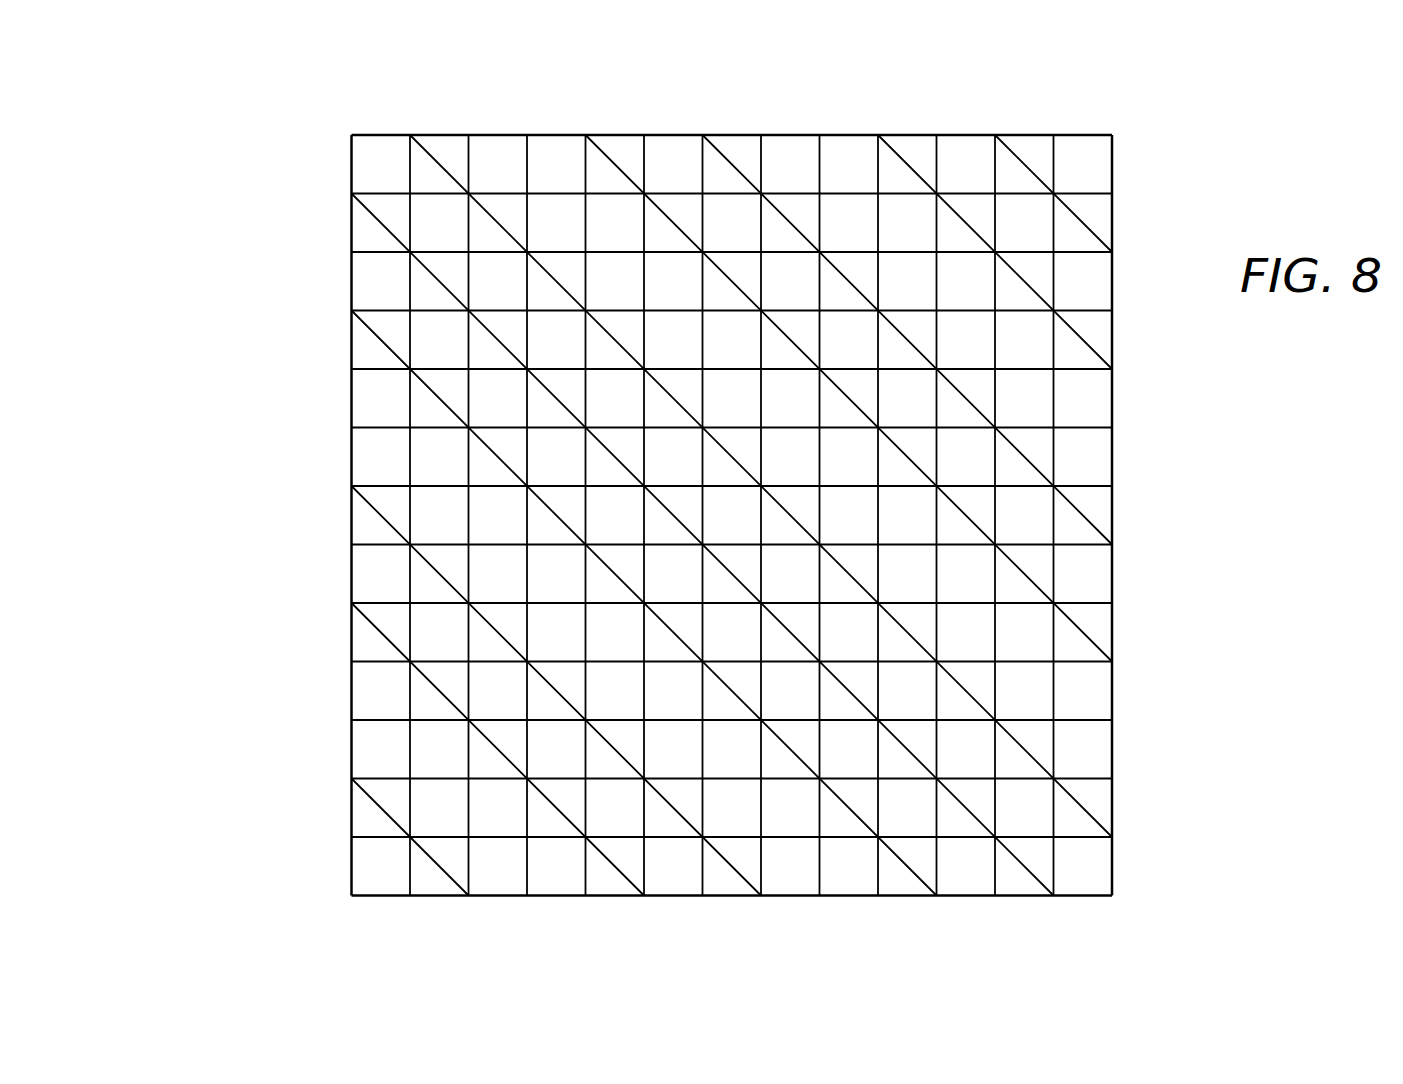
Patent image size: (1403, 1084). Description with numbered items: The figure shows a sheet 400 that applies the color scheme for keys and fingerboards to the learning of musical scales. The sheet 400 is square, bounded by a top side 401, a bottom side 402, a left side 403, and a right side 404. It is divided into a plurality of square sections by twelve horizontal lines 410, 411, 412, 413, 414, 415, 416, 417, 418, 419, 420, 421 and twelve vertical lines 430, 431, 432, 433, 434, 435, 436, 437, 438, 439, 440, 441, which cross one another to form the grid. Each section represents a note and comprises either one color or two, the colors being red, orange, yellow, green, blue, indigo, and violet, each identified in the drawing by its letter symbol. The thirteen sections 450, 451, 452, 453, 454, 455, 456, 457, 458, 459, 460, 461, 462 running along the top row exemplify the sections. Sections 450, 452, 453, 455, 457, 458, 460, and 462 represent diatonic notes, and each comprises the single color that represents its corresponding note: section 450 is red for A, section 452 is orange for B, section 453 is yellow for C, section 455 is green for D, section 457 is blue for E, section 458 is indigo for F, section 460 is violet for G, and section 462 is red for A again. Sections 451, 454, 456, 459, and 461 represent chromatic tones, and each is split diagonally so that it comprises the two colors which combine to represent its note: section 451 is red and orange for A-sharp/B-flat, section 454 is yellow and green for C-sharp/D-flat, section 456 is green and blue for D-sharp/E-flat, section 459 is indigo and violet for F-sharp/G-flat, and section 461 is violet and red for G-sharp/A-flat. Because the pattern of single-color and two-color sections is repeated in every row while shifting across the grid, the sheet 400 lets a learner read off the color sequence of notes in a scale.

The sheet 400 is at (1112, 392).
The top side 401 is at (1104, 134).
The bottom side 402 is at (1098, 896).
The left side 403 is at (352, 683).
The right side 404 is at (1112, 685).
The horizontal line 410 is at (352, 194).
The horizontal line 411 is at (352, 252).
The horizontal line 412 is at (352, 310).
The horizontal line 413 is at (352, 369).
The horizontal line 414 is at (352, 428).
The horizontal line 415 is at (352, 486).
The horizontal line 416 is at (352, 544).
The horizontal line 417 is at (352, 603).
The horizontal line 418 is at (352, 662).
The horizontal line 419 is at (352, 720).
The horizontal line 420 is at (352, 778).
The horizontal line 421 is at (352, 837).
The vertical line 430 is at (410, 897).
The vertical line 431 is at (468, 897).
The vertical line 432 is at (527, 897).
The vertical line 433 is at (586, 897).
The vertical line 434 is at (644, 897).
The vertical line 435 is at (702, 897).
The vertical line 436 is at (761, 897).
The vertical line 437 is at (820, 897).
The vertical line 438 is at (878, 897).
The vertical line 439 is at (936, 897).
The vertical line 440 is at (995, 897).
The vertical line 441 is at (1054, 897).
The section 450 is at (382, 141).
The section 451 is at (440, 141).
The section 452 is at (498, 141).
The section 453 is at (557, 141).
The section 454 is at (616, 141).
The section 455 is at (674, 141).
The section 456 is at (732, 141).
The section 457 is at (791, 141).
The section 458 is at (850, 141).
The section 459 is at (908, 141).
The section 460 is at (966, 141).
The section 461 is at (1025, 141).
The section 462 is at (1084, 141).